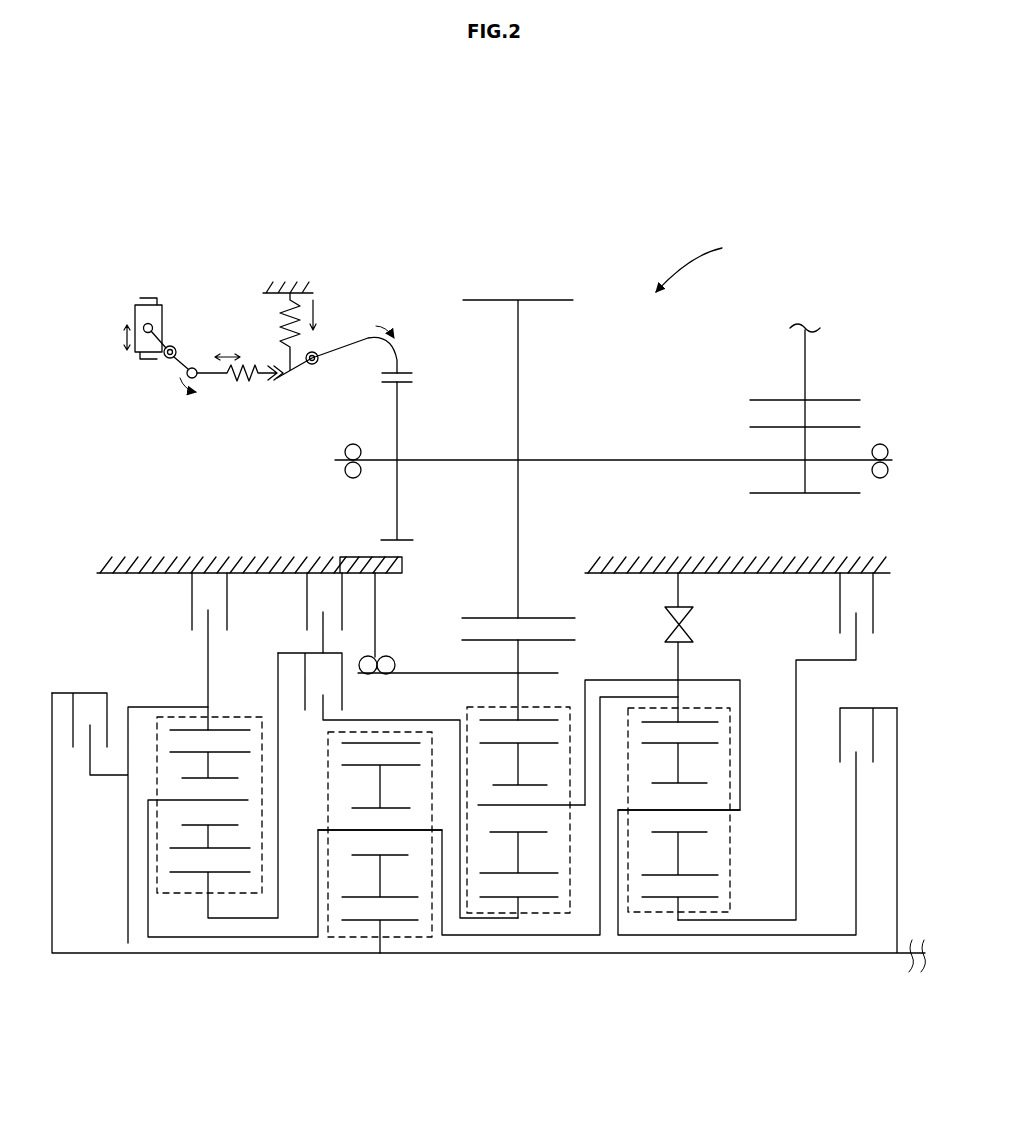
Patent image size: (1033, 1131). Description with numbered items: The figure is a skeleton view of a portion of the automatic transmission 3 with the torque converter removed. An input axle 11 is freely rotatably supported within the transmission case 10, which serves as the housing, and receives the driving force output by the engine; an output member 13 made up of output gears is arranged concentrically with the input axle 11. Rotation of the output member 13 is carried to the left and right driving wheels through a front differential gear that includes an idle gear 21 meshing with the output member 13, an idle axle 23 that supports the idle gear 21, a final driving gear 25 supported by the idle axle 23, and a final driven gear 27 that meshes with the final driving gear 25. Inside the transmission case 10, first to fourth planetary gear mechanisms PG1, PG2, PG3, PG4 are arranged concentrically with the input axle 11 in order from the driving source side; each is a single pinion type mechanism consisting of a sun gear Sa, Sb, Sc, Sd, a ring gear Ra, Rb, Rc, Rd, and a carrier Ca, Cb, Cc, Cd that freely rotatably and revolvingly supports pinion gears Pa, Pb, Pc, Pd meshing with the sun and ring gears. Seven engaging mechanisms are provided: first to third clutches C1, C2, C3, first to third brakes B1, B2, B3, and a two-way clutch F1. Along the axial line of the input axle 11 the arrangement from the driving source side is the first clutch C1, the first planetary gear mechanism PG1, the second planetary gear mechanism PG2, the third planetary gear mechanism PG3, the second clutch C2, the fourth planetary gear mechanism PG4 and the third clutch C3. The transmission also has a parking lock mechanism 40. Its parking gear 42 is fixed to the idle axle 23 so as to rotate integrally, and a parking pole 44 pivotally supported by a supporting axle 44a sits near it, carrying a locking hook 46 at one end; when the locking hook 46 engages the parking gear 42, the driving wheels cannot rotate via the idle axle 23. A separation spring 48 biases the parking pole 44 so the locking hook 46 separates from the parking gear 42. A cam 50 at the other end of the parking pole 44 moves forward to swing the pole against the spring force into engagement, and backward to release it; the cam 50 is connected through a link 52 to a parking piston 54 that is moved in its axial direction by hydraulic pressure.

The automatic transmission 3 is at (695, 264).
The transmission case 10 is at (162, 557).
The input axle 11 is at (907, 958).
The output member 13 is at (566, 640).
The idle gear 21 is at (496, 297).
The idle axle 23 is at (640, 458).
The final driving gear 25 is at (758, 426).
The final driven gear 27 is at (842, 400).
The parking lock mechanism 40 is at (190, 448).
The parking gear 42 is at (382, 383).
The parking pole 44 is at (340, 334).
The supporting axle 44a is at (312, 370).
The locking hook 46 is at (414, 378).
The separation spring 48 is at (282, 336).
The cam 50 is at (223, 390).
The link 52 is at (180, 358).
The parking piston 54 is at (133, 314).
The first brake B1 is at (775, 746).
The second brake B2 is at (324, 613).
The third brake B3 is at (209, 651).
The first clutch C1 is at (741, 807).
The second clutch C2 is at (418, 745).
The third clutch C3 is at (130, 818).
The two-way clutch F1 is at (696, 624).
The first planetary gear mechanism PG1 is at (666, 925).
The second planetary gear mechanism PG2 is at (490, 926).
The third planetary gear mechanism PG3 is at (350, 943).
The fourth planetary gear mechanism PG4 is at (214, 712).
The ring gear Ra is at (692, 717).
The carrier Ca is at (725, 810).
The pinion gear Pa is at (710, 875).
The sun gear Sa is at (700, 900).
The ring gear Rb is at (533, 718).
The carrier Cb is at (543, 809).
The pinion gear Pb is at (543, 875).
The sun gear Sb is at (537, 900).
The ring gear Rc is at (358, 745).
The carrier Cc is at (410, 828).
The pinion gear Pc is at (390, 895).
The sun gear Sc is at (403, 924).
The ring gear Rd is at (230, 730).
The carrier Cd is at (187, 797).
The pinion gear Pd is at (188, 852).
The sun gear Sd is at (187, 873).